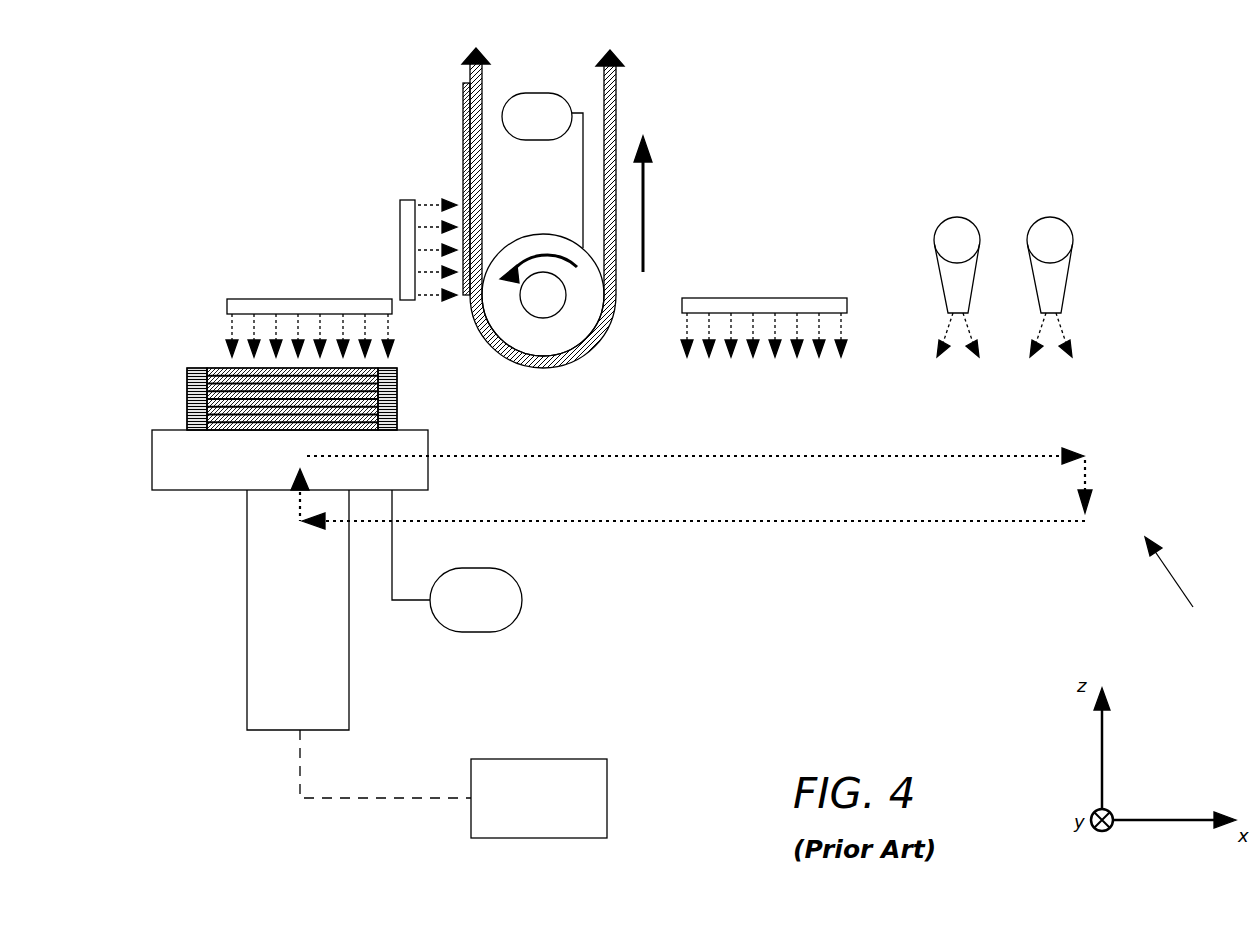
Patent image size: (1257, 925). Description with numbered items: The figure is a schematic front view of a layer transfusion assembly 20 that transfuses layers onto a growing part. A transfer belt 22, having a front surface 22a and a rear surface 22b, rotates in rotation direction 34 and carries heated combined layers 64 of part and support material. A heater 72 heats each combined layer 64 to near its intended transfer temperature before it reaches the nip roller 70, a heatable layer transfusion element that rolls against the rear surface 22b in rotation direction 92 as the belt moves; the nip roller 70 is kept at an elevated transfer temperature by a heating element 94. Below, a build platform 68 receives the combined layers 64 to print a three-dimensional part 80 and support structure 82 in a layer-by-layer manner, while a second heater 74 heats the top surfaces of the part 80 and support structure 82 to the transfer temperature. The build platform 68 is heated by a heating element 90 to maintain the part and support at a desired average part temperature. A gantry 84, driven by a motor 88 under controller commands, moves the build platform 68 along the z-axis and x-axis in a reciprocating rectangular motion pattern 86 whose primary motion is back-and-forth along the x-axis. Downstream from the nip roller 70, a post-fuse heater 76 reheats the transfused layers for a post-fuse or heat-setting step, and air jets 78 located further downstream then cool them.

The layer transfusion assembly 20 is at (1183, 582).
The transfer belt 22 is at (466, 77).
The front surface of transfer belt 22a is at (618, 115).
The rear surface of transfer belt 22b is at (485, 88).
The rotation direction 34 is at (645, 181).
The combined layers 64 is at (462, 153).
The build platform 68 is at (152, 462).
The nip roller 70 is at (499, 250).
The heater 72 is at (400, 207).
The heater 74 is at (271, 298).
The post-fuse heater 76 is at (748, 298).
The air jets 78 is at (1052, 216).
The 3D part 80 is at (218, 366).
The support structure 82 is at (187, 398).
The gantry 84 is at (350, 650).
The reciprocating rectangular motion pattern 86 is at (808, 522).
The motor 88 is at (607, 788).
The heating element 90 is at (522, 591).
The rotation direction 92 is at (562, 253).
The heating element 94 is at (520, 93).